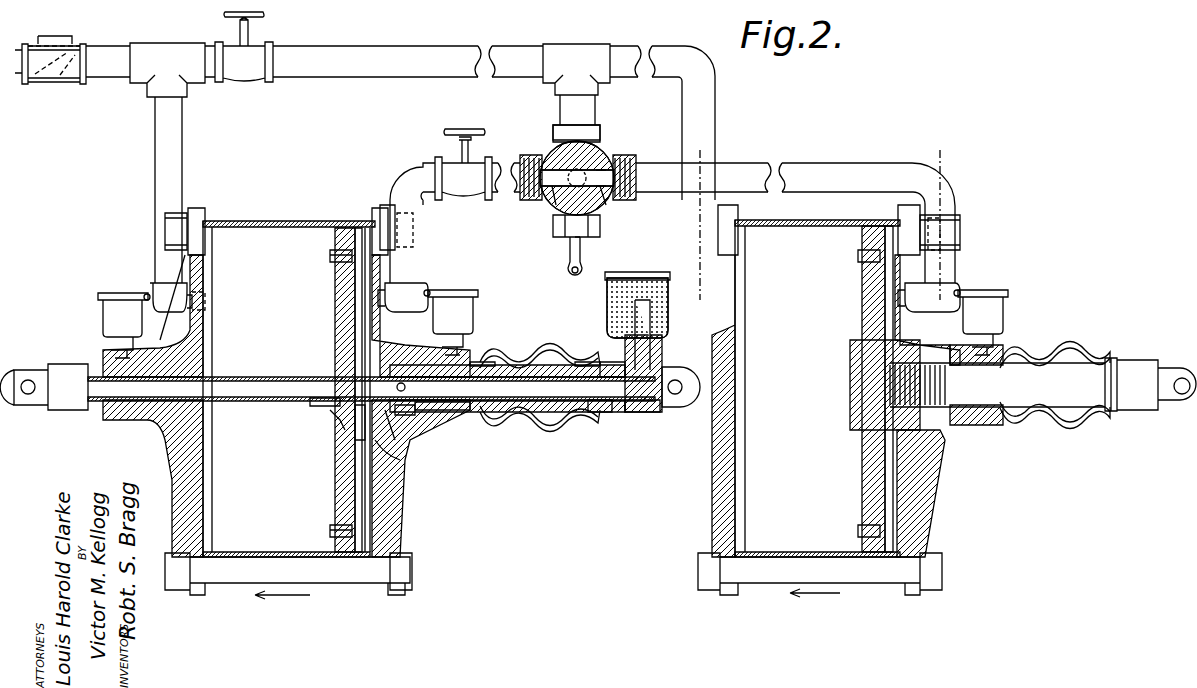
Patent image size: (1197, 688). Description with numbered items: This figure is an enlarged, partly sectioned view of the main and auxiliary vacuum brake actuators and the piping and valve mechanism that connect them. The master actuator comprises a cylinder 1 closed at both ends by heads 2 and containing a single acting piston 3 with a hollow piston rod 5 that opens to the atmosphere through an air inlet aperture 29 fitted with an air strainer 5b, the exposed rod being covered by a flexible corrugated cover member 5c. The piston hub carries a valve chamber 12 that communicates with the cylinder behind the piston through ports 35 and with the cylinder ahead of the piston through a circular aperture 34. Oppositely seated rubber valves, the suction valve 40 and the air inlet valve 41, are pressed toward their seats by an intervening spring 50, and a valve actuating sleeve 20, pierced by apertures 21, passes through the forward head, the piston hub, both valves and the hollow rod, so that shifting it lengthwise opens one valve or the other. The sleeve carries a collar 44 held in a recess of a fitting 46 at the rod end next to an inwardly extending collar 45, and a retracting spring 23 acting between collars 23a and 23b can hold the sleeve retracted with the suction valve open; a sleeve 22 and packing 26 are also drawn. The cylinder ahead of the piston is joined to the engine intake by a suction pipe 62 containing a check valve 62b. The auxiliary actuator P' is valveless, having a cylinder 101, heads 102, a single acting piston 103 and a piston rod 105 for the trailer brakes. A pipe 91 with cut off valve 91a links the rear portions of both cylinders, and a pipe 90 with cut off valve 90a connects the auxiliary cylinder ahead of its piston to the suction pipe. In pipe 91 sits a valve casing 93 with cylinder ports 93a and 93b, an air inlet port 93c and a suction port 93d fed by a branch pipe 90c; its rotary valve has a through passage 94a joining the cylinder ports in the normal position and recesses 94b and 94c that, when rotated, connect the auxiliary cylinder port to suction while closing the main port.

The cylinder 1 is at (270, 222).
The heads 2 is at (206, 300).
The piston 3 is at (338, 298).
The hollow piston rod 5 is at (512, 362).
The air strainer 5b is at (608, 310).
The corrugated cover member 5c is at (540, 427).
The valve chamber 12 is at (398, 440).
The valve actuating sleeve 20 is at (253, 376).
The apertures 21 is at (406, 387).
The sleeve 22 is at (425, 415).
The retracting spring 23 is at (505, 430).
The collar 23a is at (582, 362).
The collar 23b is at (480, 362).
The packing 26 is at (637, 288).
The air inlet aperture 29 is at (660, 370).
The circular aperture 34 is at (315, 402).
The ports 35 is at (398, 458).
The suction valve 40 is at (332, 418).
The air inlet valve 41 is at (405, 418).
The collar 44 is at (612, 414).
The inwardly extending collar 45 is at (592, 425).
The fitting 46 is at (645, 408).
The spring 50 is at (356, 430).
The suction pipe 62 is at (96, 52).
The check valve 62b is at (70, 86).
The pipe 90 is at (480, 47).
The cut off valve 90a is at (245, 52).
The branch pipe 90c is at (568, 106).
The pipe 91 is at (500, 164).
The cut off valve 91a is at (440, 160).
The valve casing 93 is at (590, 168).
The cylinder port 93a is at (552, 192).
The cylinder port 93b is at (612, 194).
The air inlet port 93c is at (600, 230).
The suction port 93d is at (596, 128).
The through passage 94a is at (624, 172).
The recess 94b is at (550, 145).
The recess 94c is at (553, 222).
The cylinder 101 is at (808, 216).
The heads 102 is at (718, 512).
The piston 103 is at (866, 313).
The piston rod 105 is at (1040, 390).
The auxiliary actuator P' is at (940, 481).